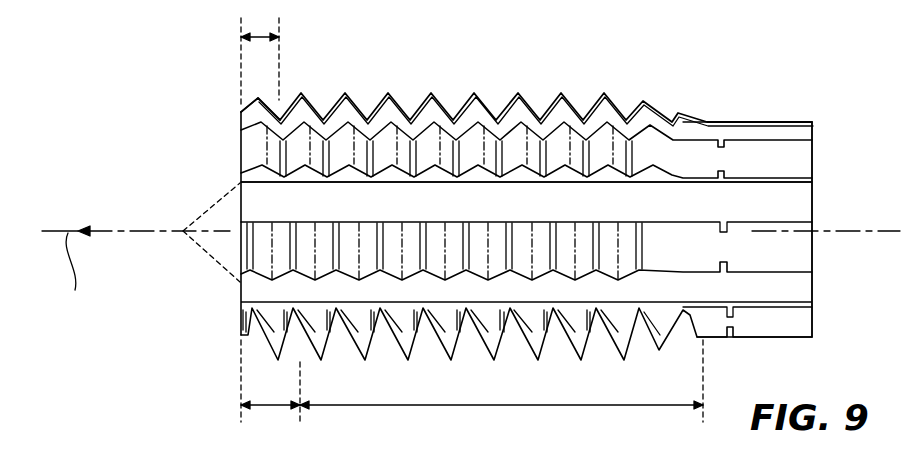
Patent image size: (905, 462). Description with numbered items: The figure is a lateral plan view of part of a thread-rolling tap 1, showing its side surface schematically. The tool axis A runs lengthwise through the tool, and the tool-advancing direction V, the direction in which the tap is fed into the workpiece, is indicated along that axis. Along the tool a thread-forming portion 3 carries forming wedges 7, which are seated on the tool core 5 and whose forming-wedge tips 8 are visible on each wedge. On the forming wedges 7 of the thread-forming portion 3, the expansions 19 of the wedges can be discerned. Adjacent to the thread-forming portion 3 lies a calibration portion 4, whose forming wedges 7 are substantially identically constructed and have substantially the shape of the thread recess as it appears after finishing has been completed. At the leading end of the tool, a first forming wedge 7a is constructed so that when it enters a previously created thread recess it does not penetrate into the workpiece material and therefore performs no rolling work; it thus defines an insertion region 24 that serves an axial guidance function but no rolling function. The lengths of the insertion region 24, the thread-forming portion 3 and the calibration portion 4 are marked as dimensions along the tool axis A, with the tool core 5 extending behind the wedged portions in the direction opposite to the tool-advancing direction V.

The thread-rolling tap 1 is at (187, 115).
The forming wedges 7 is at (247, 147).
The first forming wedge 7a is at (242, 112).
The forming-wedge tips 8 is at (247, 122).
The expansions 19 is at (248, 181).
The tool core 5 is at (662, 183).
The insertion region 24 is at (260, 59).
The thread-forming portion 3 is at (270, 388).
The calibration portion 4 is at (501, 388).
The tool-advancing direction V is at (471, 232).
The tool axis A is at (73, 274).